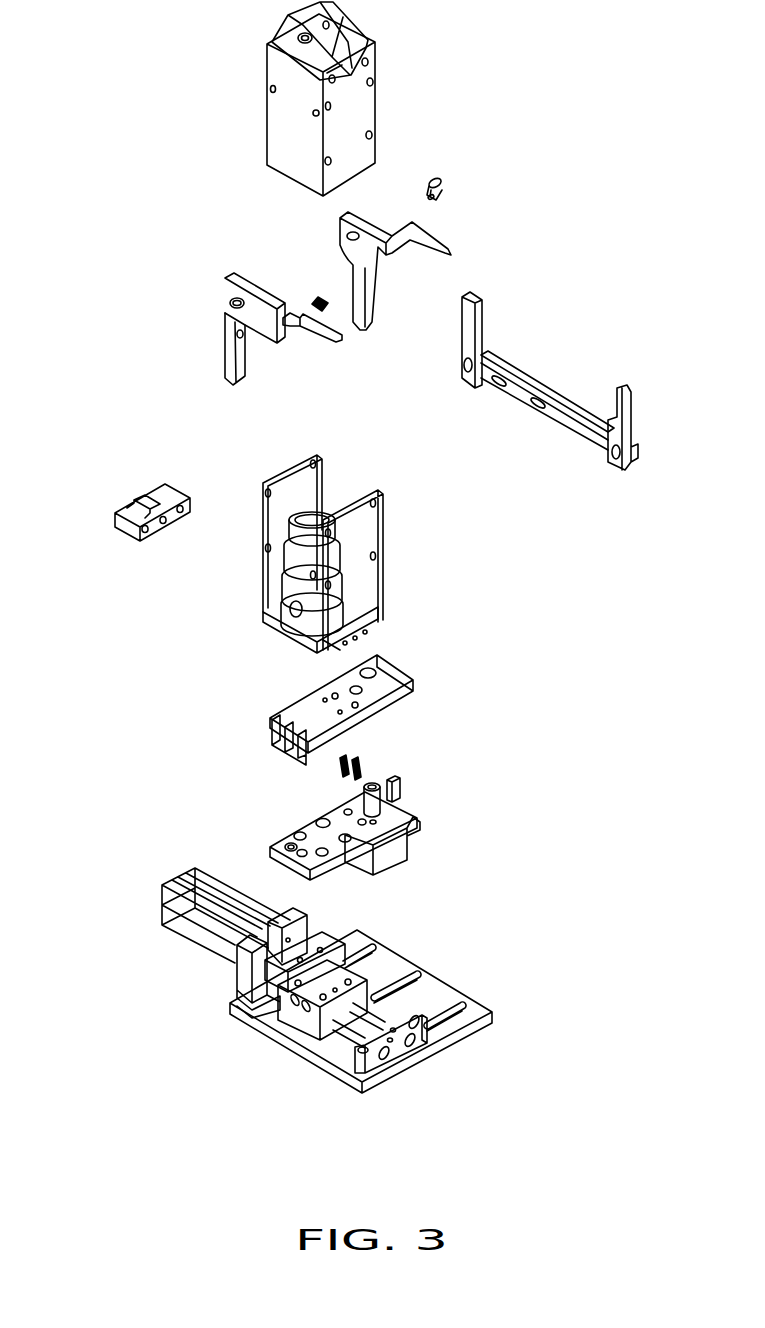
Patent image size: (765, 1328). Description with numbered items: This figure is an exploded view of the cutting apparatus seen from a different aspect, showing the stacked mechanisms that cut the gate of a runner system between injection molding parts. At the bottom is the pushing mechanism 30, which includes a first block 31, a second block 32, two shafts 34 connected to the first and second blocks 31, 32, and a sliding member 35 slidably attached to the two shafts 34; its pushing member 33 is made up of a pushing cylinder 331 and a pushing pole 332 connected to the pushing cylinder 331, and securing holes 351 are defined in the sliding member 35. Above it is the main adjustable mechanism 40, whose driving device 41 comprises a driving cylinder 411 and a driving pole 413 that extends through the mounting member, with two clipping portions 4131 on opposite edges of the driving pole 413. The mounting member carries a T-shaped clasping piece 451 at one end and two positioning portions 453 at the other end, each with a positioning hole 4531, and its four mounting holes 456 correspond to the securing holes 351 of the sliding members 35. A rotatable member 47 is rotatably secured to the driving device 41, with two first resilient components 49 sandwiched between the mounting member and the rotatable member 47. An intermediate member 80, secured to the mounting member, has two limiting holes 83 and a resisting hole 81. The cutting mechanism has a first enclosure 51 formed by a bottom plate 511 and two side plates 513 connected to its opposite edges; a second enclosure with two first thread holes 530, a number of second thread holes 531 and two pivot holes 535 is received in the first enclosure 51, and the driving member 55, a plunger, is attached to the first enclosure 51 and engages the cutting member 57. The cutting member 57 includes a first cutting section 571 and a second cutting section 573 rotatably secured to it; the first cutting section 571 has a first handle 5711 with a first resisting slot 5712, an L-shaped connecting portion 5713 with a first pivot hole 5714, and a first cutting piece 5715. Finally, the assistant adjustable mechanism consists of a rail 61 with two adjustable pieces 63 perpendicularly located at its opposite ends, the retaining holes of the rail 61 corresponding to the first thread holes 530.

The pushing mechanism 30 is at (68, 1005).
The first block 31 is at (240, 968).
The second block 32 is at (353, 1073).
The pushing member 33 is at (113, 950).
The pushing cylinder 331 is at (185, 935).
The pushing pole 332 is at (258, 965).
The shafts 34 is at (308, 993).
The sliding member 35 is at (307, 995).
The securing holes 351 is at (328, 962).
The main adjustable mechanism 40 is at (433, 672).
The driving device 41 is at (517, 808).
The driving cylinder 411 is at (388, 853).
The driving pole 413 is at (410, 817).
The clipping portions 4131 is at (365, 785).
The T-shaped clasping piece 451 is at (395, 782).
The positioning portions 453 is at (286, 845).
The positioning hole 4531 is at (318, 868).
The mounting holes 456 is at (320, 820).
The rotatable member 47 is at (318, 705).
The first resilient components 49 is at (340, 762).
The first enclosure 51 is at (178, 573).
The bottom plate 511 is at (275, 630).
The side plates 513 is at (275, 565).
The driving member 55 is at (318, 520).
The first thread holes 530 is at (273, 89).
The second thread holes 531 is at (371, 82).
The pivot holes 535 is at (303, 42).
The cutting member 57 is at (142, 182).
The first cutting section 571 is at (243, 267).
The first handle 5711 is at (228, 362).
The first resisting slot 5712 is at (237, 336).
The connecting portion 5713 is at (262, 322).
The first pivot hole 5714 is at (225, 305).
The first cutting piece 5715 is at (314, 338).
The second cutting section 573 is at (340, 225).
The rail 61 is at (575, 420).
The adjustable pieces 63 is at (470, 333).
The intermediate member 80 is at (165, 493).
The resisting hole 81 is at (165, 519).
The limiting holes 83 is at (148, 534).